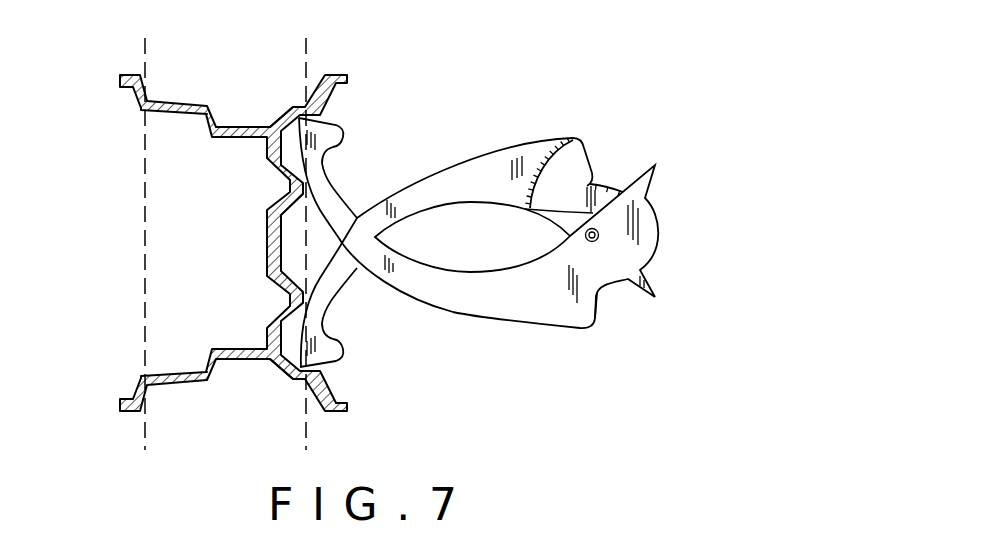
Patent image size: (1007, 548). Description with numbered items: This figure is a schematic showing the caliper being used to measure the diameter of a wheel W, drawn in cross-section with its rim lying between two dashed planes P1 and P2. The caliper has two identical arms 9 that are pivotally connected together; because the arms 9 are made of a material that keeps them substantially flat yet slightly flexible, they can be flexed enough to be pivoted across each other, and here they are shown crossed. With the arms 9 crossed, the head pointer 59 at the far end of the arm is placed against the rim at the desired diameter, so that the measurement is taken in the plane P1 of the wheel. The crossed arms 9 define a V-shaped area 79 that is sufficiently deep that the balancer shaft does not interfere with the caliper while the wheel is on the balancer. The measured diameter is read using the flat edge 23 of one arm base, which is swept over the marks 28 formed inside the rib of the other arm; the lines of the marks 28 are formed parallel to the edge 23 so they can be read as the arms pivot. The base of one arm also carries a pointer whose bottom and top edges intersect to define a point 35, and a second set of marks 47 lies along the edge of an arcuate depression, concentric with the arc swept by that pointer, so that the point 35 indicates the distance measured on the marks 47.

The arm 9 is at (405, 185).
The flat edge 23 is at (543, 217).
The marks 28 is at (590, 180).
The point 35 is at (658, 165).
The second set of marks 47 is at (548, 155).
The first pointer 59 is at (293, 107).
The V-shaped area 79 is at (325, 249).
The wheel W is at (170, 96).
The plane P1 is at (310, 37).
The plane P2 is at (143, 44).